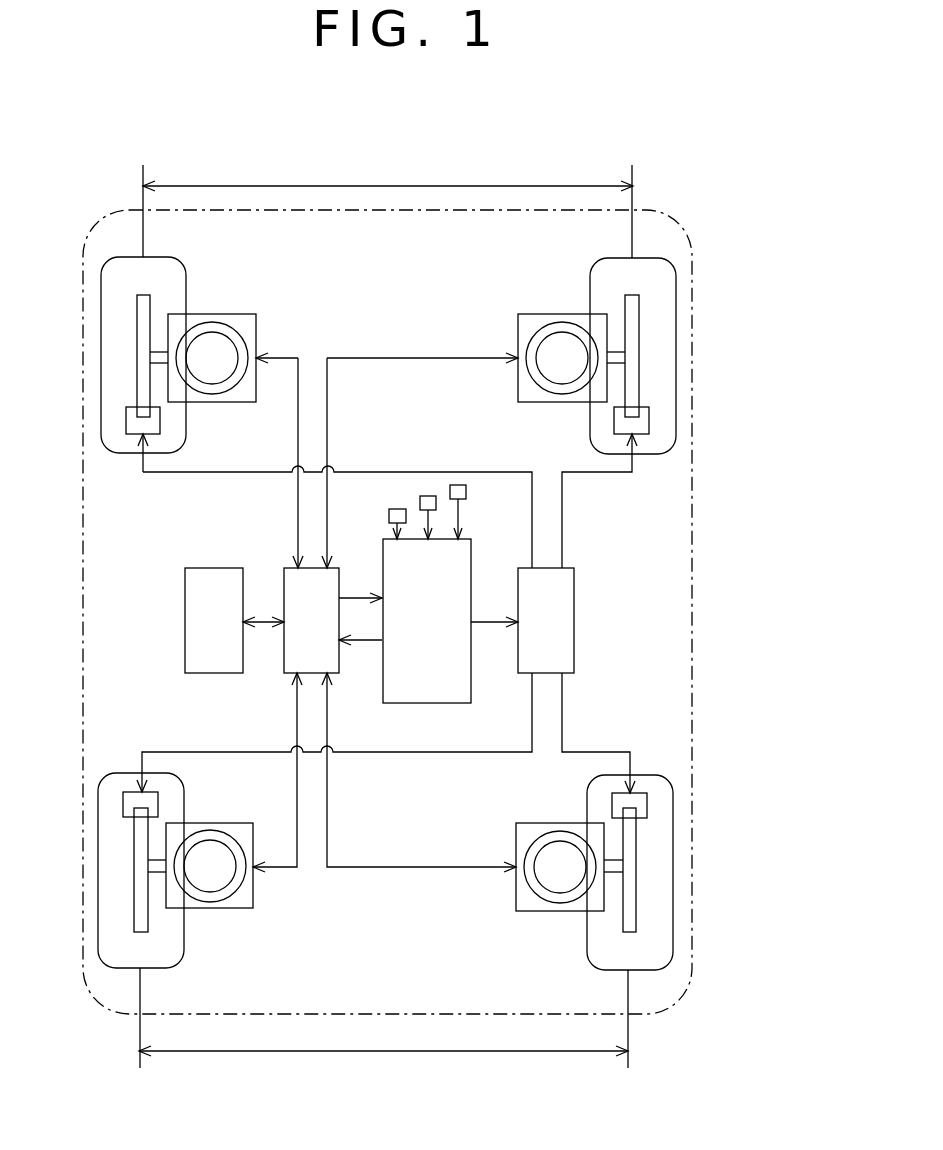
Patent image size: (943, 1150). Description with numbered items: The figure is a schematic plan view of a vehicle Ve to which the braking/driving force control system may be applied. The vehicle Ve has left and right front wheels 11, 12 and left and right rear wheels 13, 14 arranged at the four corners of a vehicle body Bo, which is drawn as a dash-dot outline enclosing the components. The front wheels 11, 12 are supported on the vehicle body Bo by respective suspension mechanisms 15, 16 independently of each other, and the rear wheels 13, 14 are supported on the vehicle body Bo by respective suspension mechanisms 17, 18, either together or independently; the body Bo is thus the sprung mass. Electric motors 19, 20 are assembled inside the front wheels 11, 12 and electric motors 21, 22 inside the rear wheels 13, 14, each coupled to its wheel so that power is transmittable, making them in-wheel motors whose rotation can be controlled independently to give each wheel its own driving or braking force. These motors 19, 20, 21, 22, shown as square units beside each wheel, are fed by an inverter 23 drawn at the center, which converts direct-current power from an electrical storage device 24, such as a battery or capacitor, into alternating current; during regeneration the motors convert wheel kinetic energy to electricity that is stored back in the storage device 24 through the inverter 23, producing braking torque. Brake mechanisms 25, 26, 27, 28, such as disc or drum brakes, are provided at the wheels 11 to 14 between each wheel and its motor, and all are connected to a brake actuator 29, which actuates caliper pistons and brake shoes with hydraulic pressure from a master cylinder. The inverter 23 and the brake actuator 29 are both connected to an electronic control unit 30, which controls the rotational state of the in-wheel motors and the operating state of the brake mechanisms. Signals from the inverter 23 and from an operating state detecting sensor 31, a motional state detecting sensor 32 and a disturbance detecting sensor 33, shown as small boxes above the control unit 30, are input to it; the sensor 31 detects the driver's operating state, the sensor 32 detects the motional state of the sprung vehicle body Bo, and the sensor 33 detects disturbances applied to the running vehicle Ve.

The left front wheel 11 is at (157, 257).
The right front wheel 12 is at (615, 258).
The left rear wheel 13 is at (155, 968).
The right rear wheel 14 is at (612, 970).
The suspension mechanism 15 is at (213, 322).
The suspension mechanism 16 is at (562, 322).
The suspension mechanism 17 is at (211, 831).
The suspension mechanism 18 is at (559, 831).
The electric motor 19 is at (237, 402).
The electric motor 20 is at (540, 402).
The electric motor 21 is at (232, 908).
The electric motor 22 is at (538, 911).
The inverter 23 is at (287, 568).
The electrical storage device 24 is at (198, 568).
The brake mechanism 25 is at (126, 420).
The brake mechanism 26 is at (649, 420).
The brake mechanism 27 is at (123, 802).
The brake mechanism 28 is at (647, 802).
The brake actuator 29 is at (574, 620).
The electronic control unit 30 is at (471, 546).
The operating state detecting sensor 31 is at (389, 516).
The motional state detecting sensor 32 is at (420, 500).
The disturbance detecting sensor 33 is at (466, 492).
The vehicle Ve is at (675, 162).
The vehicle body Bo is at (692, 587).